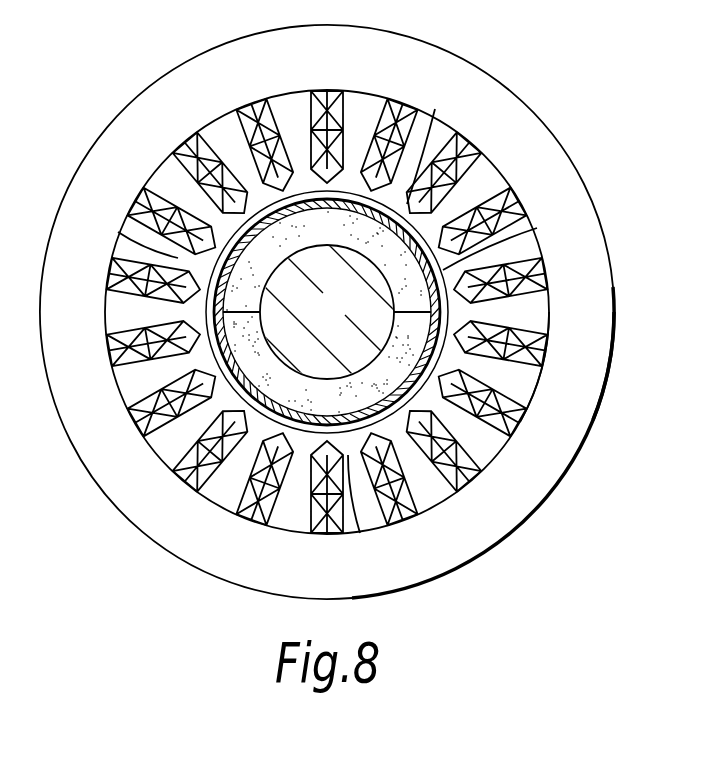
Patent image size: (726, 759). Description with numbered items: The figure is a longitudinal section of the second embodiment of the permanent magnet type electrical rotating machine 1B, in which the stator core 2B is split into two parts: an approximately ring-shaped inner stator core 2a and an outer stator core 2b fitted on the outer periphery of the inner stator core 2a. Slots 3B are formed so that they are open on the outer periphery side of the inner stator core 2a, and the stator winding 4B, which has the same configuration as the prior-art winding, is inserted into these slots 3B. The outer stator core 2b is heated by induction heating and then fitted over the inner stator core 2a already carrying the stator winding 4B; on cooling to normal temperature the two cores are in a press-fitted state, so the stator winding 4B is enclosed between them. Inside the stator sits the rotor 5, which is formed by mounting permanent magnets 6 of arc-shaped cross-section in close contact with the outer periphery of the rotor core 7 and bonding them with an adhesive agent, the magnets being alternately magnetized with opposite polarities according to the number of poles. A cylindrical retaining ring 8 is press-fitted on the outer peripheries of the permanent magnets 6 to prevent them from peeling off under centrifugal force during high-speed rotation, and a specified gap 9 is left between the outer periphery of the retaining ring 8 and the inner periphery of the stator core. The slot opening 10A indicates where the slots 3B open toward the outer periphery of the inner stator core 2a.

The brushless motor 1B is at (450, 83).
The stator core 2B is at (458, 530).
The inner stator core 2a is at (529, 384).
The outer stator core 2b is at (598, 383).
The slots 3B is at (533, 290).
The stator winding 4B is at (190, 143).
The rotor 5 is at (420, 232).
The permanent magnets 6 is at (253, 265).
The rotor core 7 is at (333, 326).
The retaining ring 8 is at (435, 109).
The gap 9 is at (537, 228).
The slot opening 10A is at (118, 232).